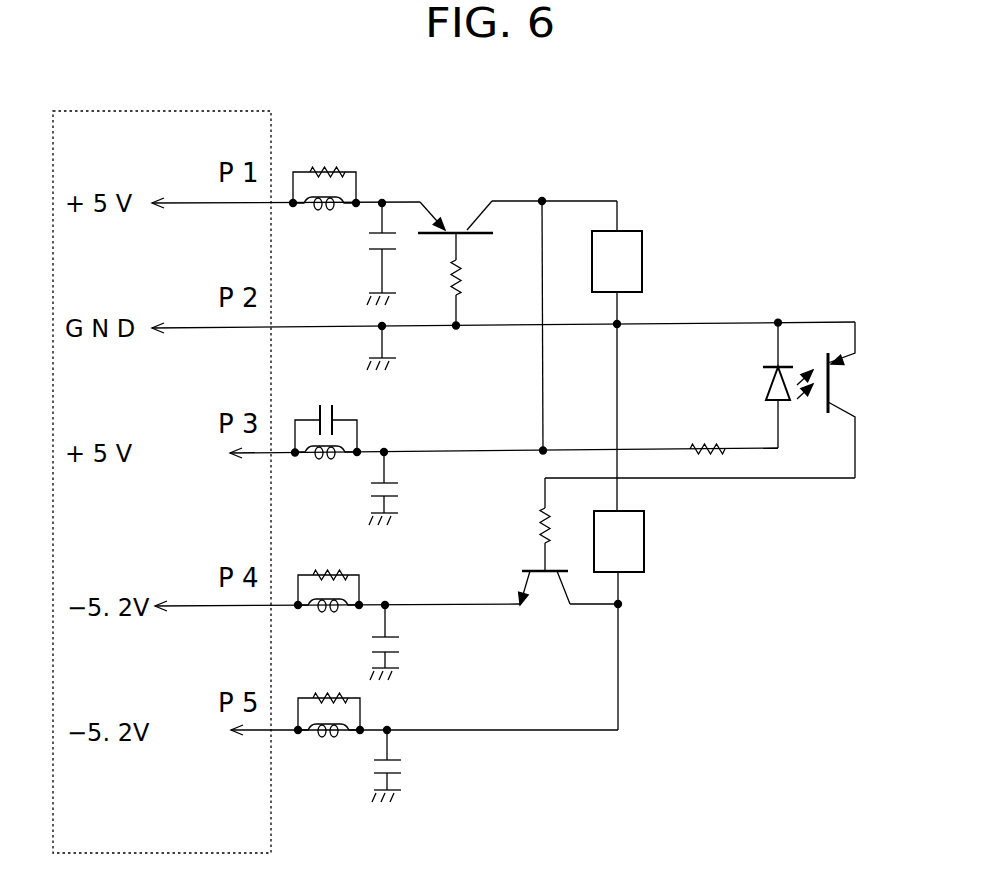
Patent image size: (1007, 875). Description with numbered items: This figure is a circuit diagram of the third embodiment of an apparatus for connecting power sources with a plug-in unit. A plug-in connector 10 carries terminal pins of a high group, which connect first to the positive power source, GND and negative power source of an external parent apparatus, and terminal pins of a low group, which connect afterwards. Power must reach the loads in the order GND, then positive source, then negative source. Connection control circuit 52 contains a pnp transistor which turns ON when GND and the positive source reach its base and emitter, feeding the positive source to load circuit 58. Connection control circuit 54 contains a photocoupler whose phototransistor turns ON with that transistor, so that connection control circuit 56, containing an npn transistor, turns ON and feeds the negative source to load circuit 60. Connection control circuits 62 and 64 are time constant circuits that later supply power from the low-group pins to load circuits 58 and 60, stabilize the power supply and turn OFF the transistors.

The plug-in connector 10 is at (224, 111).
The connection control circuit 52 is at (452, 208).
The connection control circuit 54 is at (813, 313).
The connection control circuit 56 is at (543, 597).
The load circuit 58 is at (643, 245).
The load circuit 60 is at (645, 540).
The connection control circuit 62 is at (372, 430).
The connection control circuit 64 is at (365, 718).